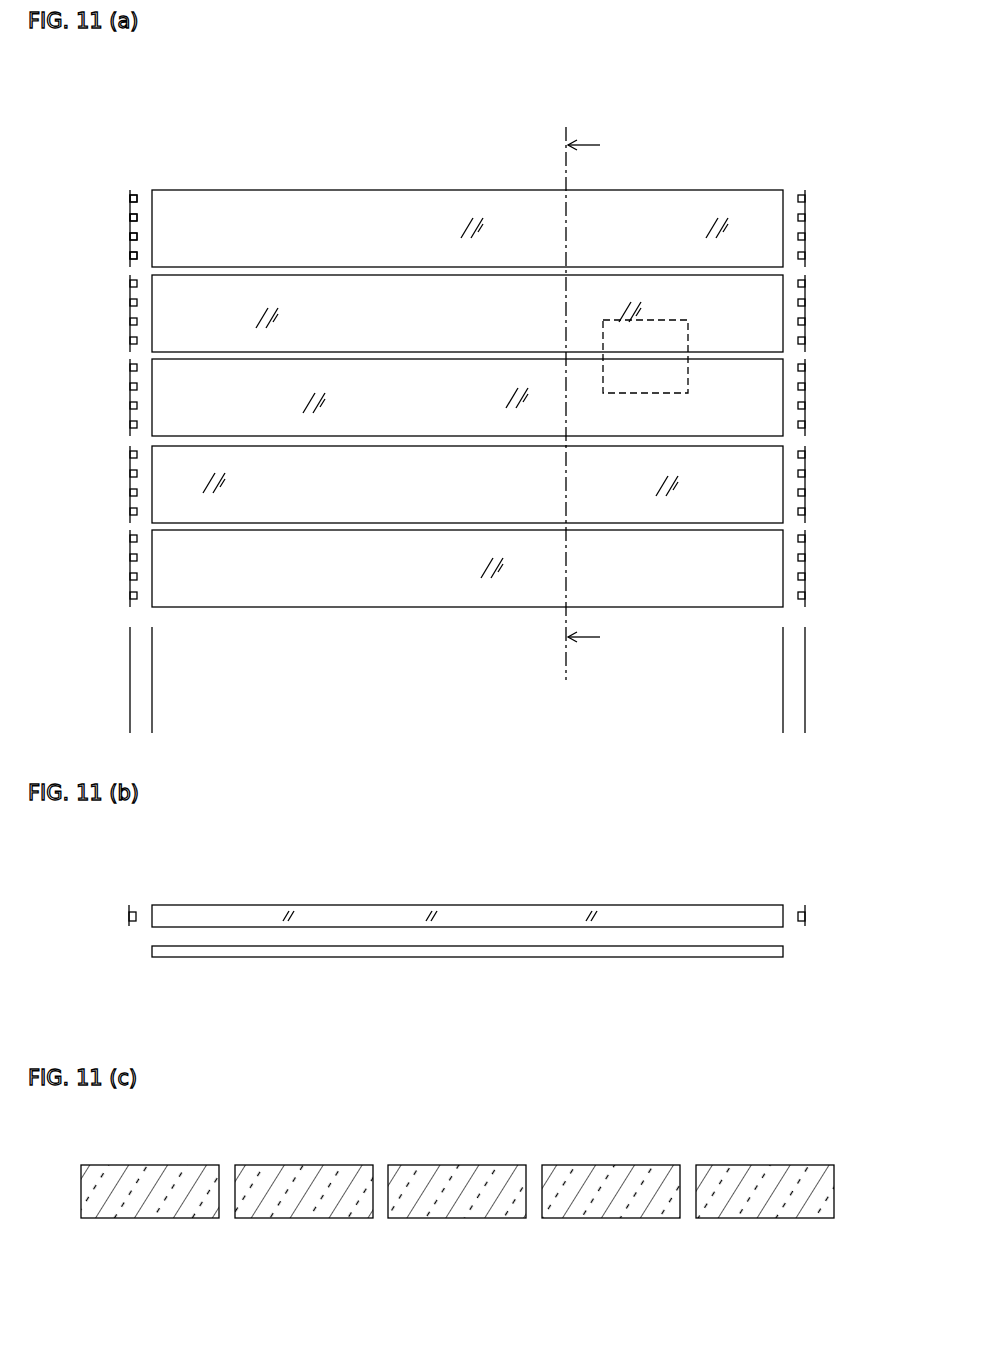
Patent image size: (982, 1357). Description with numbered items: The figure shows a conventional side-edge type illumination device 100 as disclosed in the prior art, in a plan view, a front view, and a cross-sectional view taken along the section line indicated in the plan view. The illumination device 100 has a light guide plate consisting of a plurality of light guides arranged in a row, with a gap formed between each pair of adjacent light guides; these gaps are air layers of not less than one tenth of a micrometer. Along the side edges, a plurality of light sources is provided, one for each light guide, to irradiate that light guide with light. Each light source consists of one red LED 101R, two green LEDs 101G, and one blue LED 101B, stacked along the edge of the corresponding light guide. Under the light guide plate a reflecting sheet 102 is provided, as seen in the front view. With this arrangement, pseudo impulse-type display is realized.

The illumination device 100 is at (466, 425).
The red LED 101R is at (129, 198).
The green LED 101G is at (129, 217).
The blue LED 101B is at (129, 237).
The reflecting sheet 102 is at (617, 950).